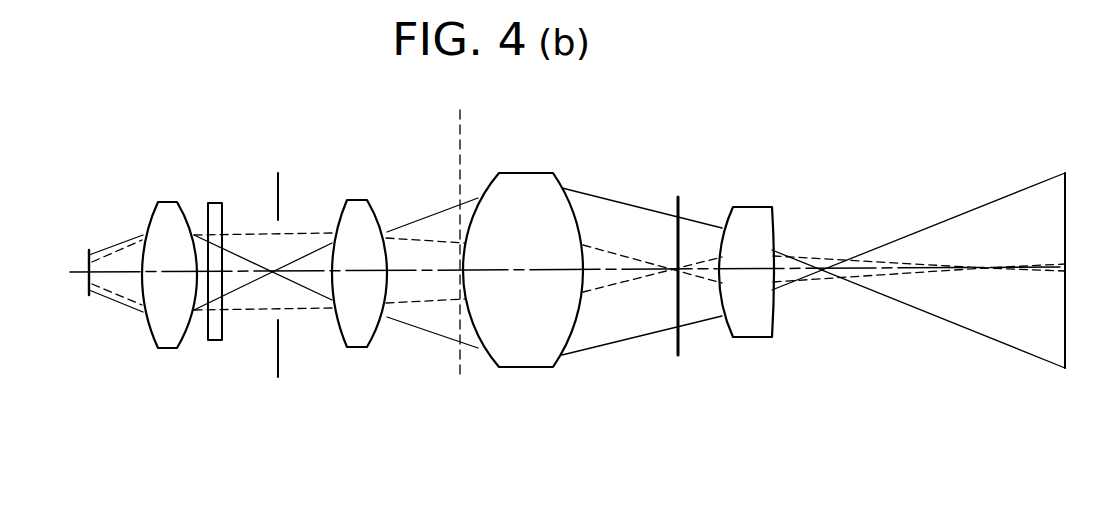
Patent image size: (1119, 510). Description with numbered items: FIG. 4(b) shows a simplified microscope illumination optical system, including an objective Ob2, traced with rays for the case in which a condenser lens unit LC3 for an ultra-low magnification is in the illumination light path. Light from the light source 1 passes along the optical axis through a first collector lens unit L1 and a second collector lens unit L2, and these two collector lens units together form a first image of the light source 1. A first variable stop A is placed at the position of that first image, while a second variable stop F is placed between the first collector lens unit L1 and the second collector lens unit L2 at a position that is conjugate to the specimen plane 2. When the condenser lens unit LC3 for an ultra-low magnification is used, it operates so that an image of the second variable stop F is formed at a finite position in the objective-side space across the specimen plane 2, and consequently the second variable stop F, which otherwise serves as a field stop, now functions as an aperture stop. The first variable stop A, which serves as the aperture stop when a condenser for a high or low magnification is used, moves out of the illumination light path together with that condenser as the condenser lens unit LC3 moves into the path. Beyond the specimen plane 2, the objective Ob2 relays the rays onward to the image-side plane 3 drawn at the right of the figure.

The light source 1 is at (88, 267).
The specimen plane 2 is at (678, 208).
The image plane (screen) 3 is at (1065, 198).
The first collector lens unit L1 is at (169, 246).
The second variable stop F is at (274, 251).
The second collector lens unit L2 is at (359, 245).
The first variable stop A is at (442, 244).
The condenser lens unit for an ultra-low magnification LC3 is at (523, 246).
The objective lens Ob2 is at (751, 231).